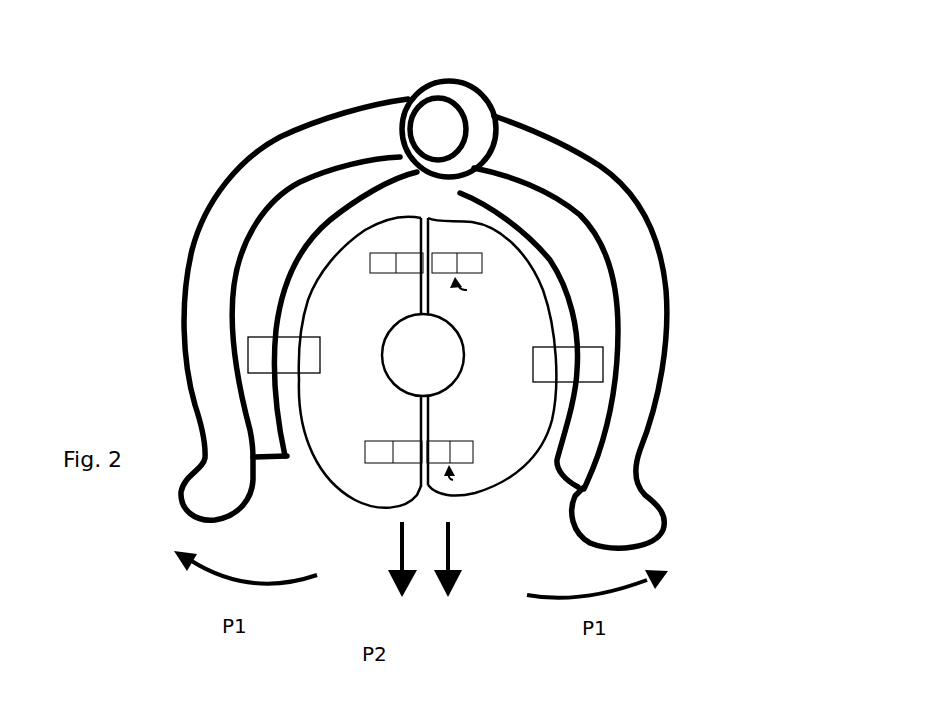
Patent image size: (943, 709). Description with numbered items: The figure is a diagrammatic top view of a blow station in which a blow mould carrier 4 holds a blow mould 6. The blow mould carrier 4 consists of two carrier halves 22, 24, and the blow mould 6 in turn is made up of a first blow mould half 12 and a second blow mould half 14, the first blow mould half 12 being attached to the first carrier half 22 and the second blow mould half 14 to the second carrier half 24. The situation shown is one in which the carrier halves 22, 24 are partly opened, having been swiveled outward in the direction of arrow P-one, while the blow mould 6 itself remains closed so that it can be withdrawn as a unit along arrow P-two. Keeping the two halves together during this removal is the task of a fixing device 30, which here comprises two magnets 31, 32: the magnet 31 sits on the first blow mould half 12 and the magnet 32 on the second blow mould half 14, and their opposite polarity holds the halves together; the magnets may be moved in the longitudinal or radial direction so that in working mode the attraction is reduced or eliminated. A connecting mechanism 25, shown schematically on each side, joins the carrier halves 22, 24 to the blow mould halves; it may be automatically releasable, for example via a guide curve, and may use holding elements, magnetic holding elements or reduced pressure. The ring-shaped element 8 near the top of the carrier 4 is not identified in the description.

The blow mould carrier 4 is at (158, 288).
The blow mould 6 is at (342, 328).
The pivot ring 8 is at (437, 132).
The first blow mould half 12 is at (366, 407).
The second blow mould half 14 is at (506, 394).
The first carrier half 22 is at (205, 237).
The second carrier half 24 is at (637, 272).
The connecting mechanism 25 is at (283, 347).
The fixing device 30 is at (467, 290).
The magnet 31 is at (382, 253).
The magnet 32 is at (470, 253).